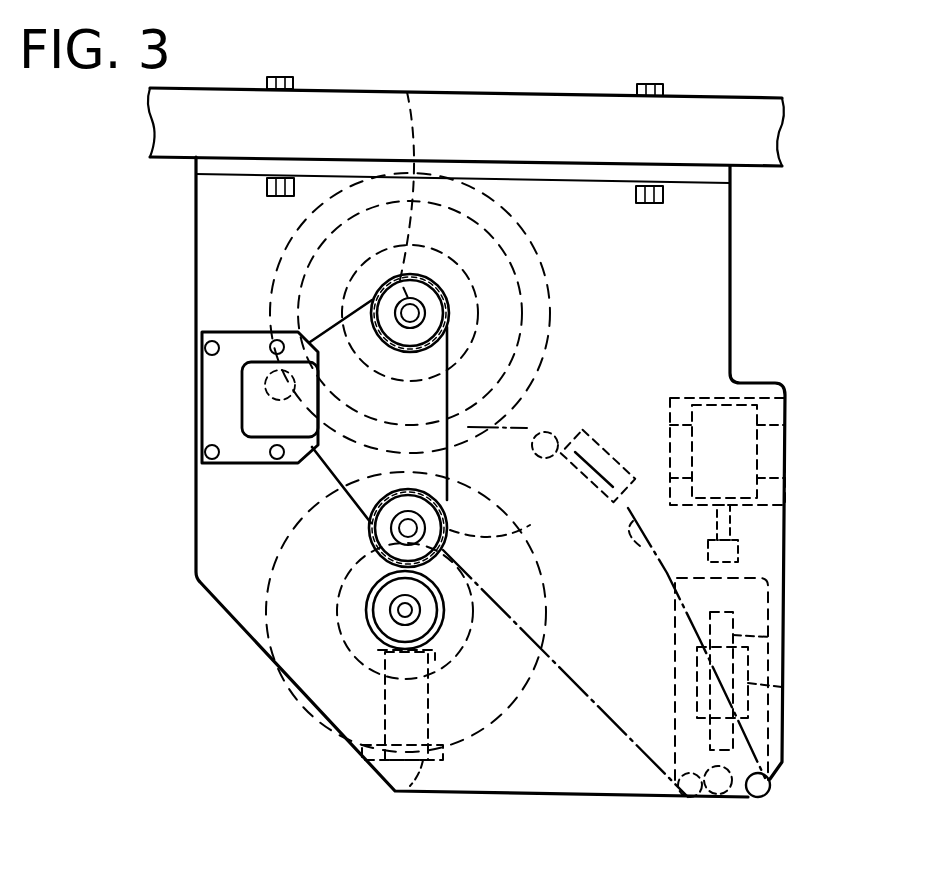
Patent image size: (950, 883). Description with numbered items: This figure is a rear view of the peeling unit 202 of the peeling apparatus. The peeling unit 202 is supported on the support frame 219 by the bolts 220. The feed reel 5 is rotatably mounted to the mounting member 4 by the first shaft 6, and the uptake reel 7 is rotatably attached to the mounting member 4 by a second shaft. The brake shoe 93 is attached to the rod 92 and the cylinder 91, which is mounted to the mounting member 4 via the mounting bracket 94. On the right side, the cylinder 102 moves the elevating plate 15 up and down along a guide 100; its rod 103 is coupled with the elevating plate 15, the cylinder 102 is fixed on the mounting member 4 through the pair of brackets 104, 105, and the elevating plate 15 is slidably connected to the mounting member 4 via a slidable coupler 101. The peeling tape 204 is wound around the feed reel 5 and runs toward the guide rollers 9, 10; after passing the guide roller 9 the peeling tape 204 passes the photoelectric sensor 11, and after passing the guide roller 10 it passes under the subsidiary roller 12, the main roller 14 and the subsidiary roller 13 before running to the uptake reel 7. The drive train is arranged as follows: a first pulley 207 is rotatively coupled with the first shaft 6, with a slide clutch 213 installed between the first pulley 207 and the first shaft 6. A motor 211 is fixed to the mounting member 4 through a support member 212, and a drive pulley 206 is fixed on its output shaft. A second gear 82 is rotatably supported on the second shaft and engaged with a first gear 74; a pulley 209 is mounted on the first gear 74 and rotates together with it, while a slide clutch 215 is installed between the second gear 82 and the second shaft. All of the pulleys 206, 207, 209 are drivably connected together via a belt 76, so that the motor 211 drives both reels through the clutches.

The mounting member 4 is at (730, 262).
The feed reel 5 is at (520, 216).
The first shaft 6 is at (430, 306).
The uptake reel 7 is at (312, 713).
The guide roller 9 is at (513, 446).
The guide roller 10 is at (627, 541).
The photoelectric sensor 11 is at (598, 453).
The subsidiary roller 12 is at (766, 798).
The subsidiary roller 13 is at (690, 800).
The main roller 14 is at (718, 796).
The elevating plate 15 is at (775, 620).
The first gear 74 is at (443, 494).
The belt 76 is at (340, 478).
The second gear 82 is at (367, 603).
The cylinder 91 is at (343, 740).
The rod 92 is at (497, 713).
The brake shoe 93 is at (293, 682).
The mounting bracket 94 is at (409, 788).
The guide 100 is at (770, 638).
The slidable coupler 101 is at (782, 687).
The cylinder 102 is at (757, 467).
The rod 103 is at (745, 527).
The bracket 104 is at (737, 397).
The bracket 105 is at (757, 502).
The peeling unit 202 is at (128, 288).
The peeling tape 204 is at (625, 730).
The drive pulley 206 is at (300, 378).
The first pulley 207 is at (409, 177).
The pulley 209 is at (497, 503).
The motor 211 is at (248, 385).
The support member 212 is at (206, 453).
The slide clutch 213 is at (442, 316).
The slide clutch 215 is at (428, 622).
The support frame 219 is at (485, 108).
The bolts 220 is at (293, 80).